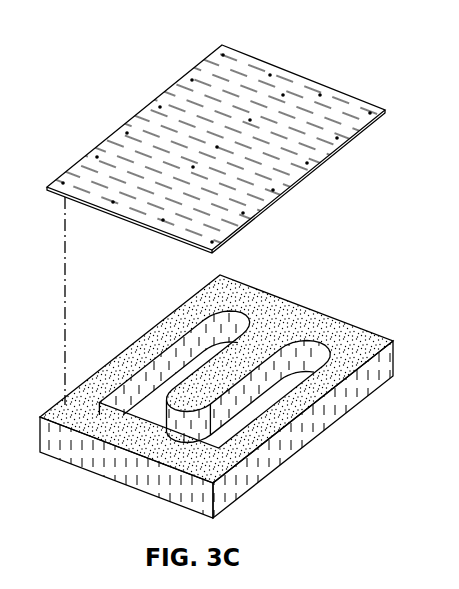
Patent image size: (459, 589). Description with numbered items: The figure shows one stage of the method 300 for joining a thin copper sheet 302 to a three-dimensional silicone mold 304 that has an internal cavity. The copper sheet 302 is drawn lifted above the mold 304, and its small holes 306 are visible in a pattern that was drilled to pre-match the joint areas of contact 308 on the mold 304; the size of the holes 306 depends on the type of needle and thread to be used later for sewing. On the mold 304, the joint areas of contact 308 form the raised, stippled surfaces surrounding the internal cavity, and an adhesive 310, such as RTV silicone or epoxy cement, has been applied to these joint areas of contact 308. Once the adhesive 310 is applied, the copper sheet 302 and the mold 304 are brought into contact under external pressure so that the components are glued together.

The method 300 is at (120, 50).
The copper sheet 302 is at (253, 203).
The silicone mold 304 is at (138, 485).
The holes 306 is at (270, 75).
The joint areas of contact 308 is at (94, 420).
The adhesive 310 is at (292, 298).